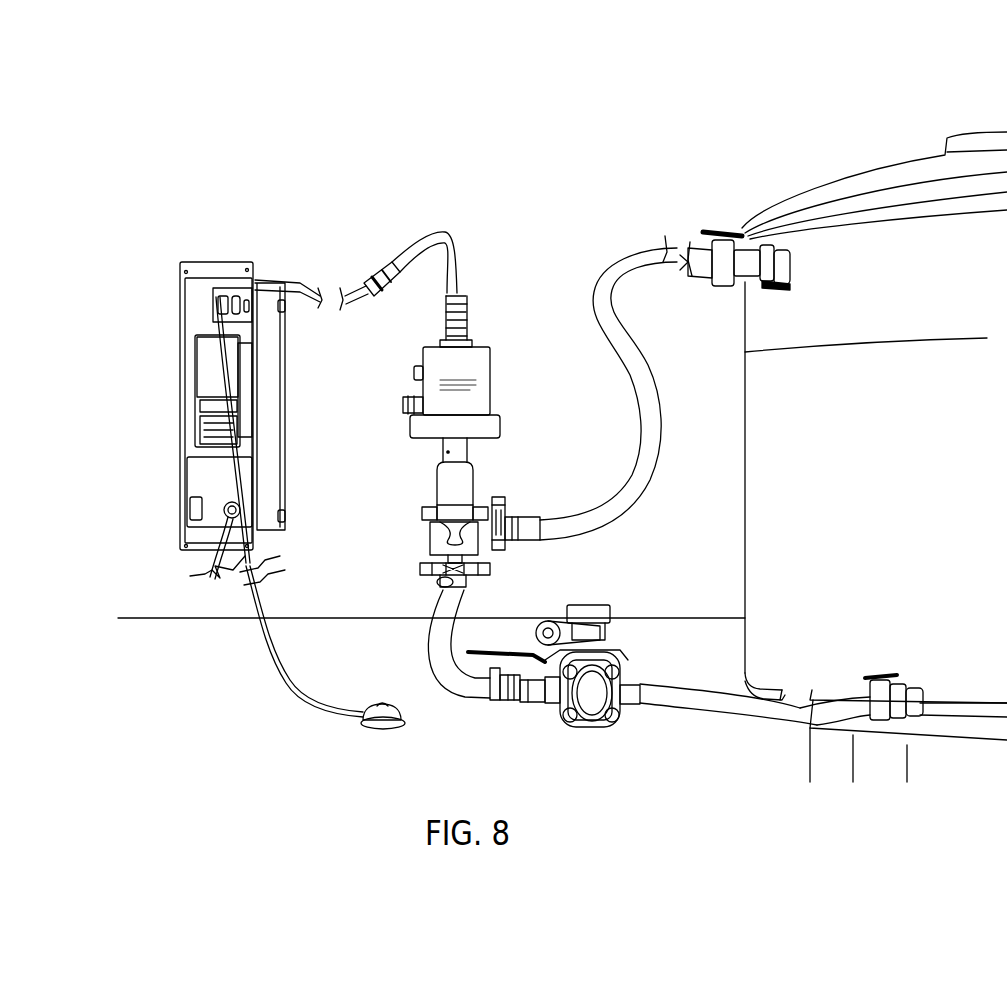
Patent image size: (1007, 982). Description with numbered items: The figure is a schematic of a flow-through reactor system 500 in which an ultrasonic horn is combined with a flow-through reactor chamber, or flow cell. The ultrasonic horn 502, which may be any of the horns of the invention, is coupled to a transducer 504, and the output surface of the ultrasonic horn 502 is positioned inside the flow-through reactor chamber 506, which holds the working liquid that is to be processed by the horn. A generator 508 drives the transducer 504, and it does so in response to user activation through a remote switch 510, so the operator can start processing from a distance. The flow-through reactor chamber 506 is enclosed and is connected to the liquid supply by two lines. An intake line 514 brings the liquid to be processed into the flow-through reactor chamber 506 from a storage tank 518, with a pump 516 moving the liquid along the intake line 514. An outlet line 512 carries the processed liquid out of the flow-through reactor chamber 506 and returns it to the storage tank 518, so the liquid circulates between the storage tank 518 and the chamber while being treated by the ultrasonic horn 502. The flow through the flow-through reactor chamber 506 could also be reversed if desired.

The flow-through reactor system 500 is at (376, 120).
The ultrasonic horn 502 is at (437, 492).
The transducer 504 is at (423, 396).
The flow-through reactor chamber 506 is at (437, 550).
The generator 508 is at (255, 278).
The remote switch 510 is at (370, 705).
The outlet line 512 is at (618, 502).
The intake line 514 is at (460, 697).
The pump 516 is at (592, 727).
The storage tank 518 is at (758, 623).